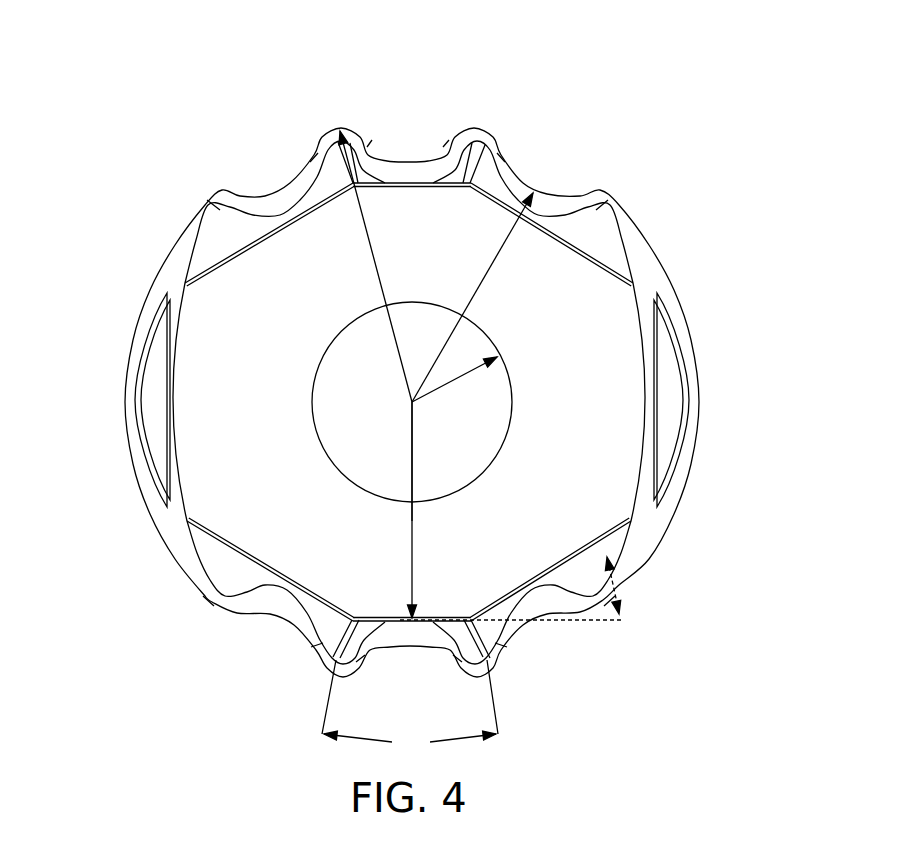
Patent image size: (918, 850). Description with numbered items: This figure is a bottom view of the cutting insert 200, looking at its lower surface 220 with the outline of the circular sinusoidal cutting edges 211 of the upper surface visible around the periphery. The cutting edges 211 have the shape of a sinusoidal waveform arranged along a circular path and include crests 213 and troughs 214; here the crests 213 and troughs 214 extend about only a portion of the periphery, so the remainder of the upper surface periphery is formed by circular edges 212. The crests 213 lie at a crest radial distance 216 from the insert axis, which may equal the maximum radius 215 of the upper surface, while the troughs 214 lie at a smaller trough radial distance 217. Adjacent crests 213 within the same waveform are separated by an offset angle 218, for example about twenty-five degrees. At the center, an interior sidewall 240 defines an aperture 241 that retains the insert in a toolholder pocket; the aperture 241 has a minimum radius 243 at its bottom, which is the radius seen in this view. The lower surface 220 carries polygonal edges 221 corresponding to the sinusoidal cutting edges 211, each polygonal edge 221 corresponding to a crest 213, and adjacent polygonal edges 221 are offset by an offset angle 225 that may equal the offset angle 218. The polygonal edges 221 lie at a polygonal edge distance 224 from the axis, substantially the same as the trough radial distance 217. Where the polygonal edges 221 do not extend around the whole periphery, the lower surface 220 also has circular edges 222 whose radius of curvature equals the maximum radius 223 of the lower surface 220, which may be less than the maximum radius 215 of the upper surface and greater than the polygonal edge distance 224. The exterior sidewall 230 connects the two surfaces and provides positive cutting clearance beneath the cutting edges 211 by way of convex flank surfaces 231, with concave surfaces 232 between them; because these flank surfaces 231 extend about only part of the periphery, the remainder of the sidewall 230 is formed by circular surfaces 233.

The cutting insert 200 is at (170, 100).
The circular sinusoidal cutting edges 211 is at (417, 117).
The crests 213 is at (341, 126).
The troughs 214 is at (284, 623).
The circular edges 212 is at (125, 405).
The circular edges 222 is at (172, 338).
The exterior sidewall 230 is at (647, 260).
The circular surfaces 233 is at (715, 545).
The lower surface 220 is at (433, 256).
The maximum radius of the upper surface 215 is at (362, 233).
The crest radial distance 216 is at (372, 272).
The trough radial distance 217 is at (490, 262).
The minimum radius of the aperture 243 is at (450, 385).
The polygonal edge distance 224 is at (412, 570).
The maximum radius of the lower surface 223 is at (412, 532).
The interior sidewall 240 is at (487, 463).
The aperture 241 is at (507, 363).
The offset angle 218 is at (410, 709).
The offset angle 225 is at (617, 587).
The polygonal edges 221 is at (573, 555).
The concave surfaces 232 is at (537, 607).
The convex flank surfaces 231 is at (490, 667).